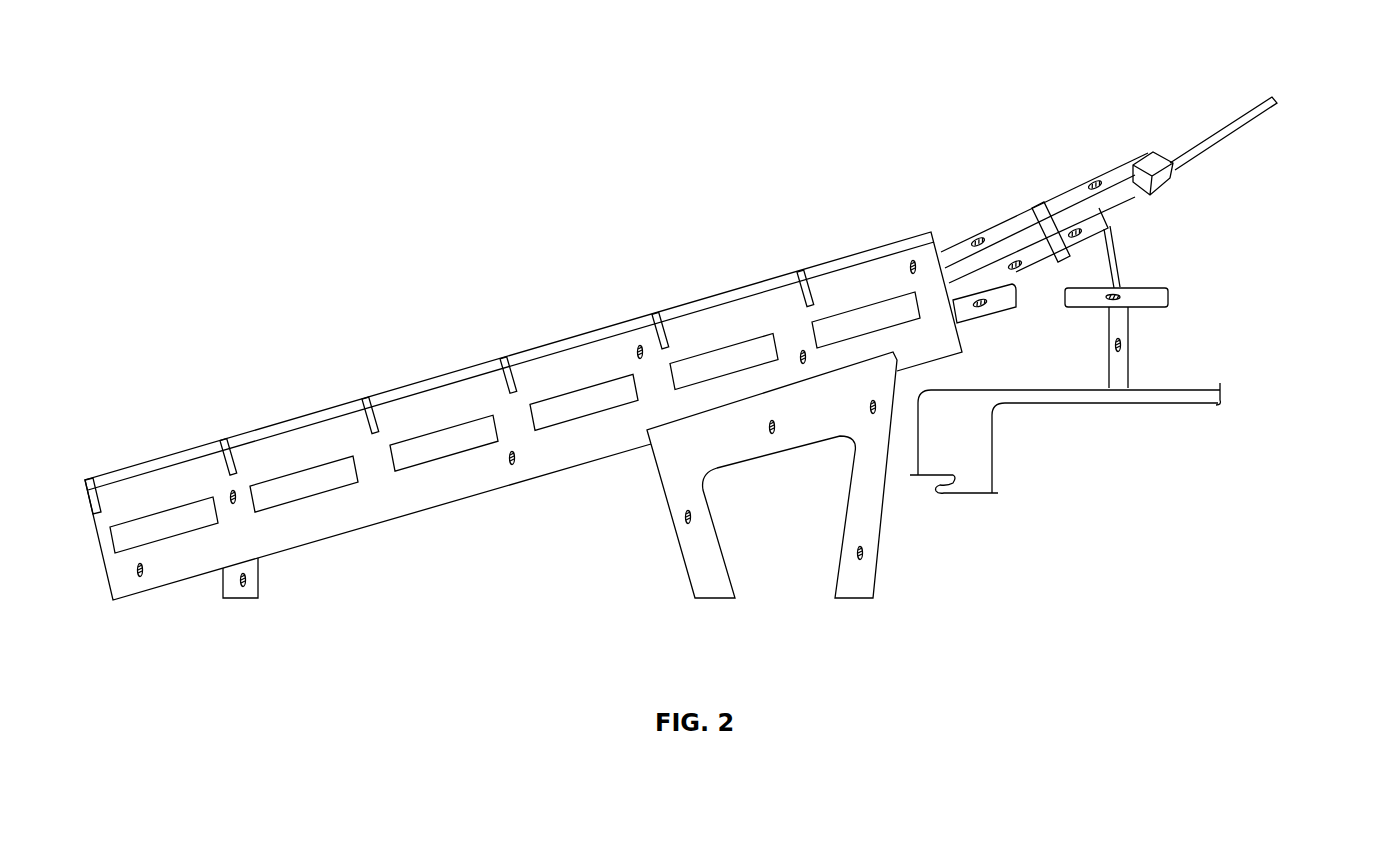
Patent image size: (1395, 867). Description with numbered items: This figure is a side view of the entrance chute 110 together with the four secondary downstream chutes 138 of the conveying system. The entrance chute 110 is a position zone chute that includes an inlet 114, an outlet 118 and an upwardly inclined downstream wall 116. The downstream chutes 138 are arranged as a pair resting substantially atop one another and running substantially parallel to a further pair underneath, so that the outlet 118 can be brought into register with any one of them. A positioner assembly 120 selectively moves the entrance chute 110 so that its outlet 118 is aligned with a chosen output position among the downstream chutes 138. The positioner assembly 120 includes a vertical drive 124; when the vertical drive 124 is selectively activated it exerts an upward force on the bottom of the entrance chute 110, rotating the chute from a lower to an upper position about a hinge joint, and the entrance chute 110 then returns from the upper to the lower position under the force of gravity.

The entrance chute 110 is at (1015, 227).
The inlet 114 is at (1135, 197).
The upwardly inclined downstream wall 116 is at (1083, 203).
The entrance chute outlet 118 is at (943, 270).
The positioner assembly 120 is at (1108, 228).
The vertical drive 124 is at (1117, 272).
The secondary downstream chutes 138 is at (565, 407).